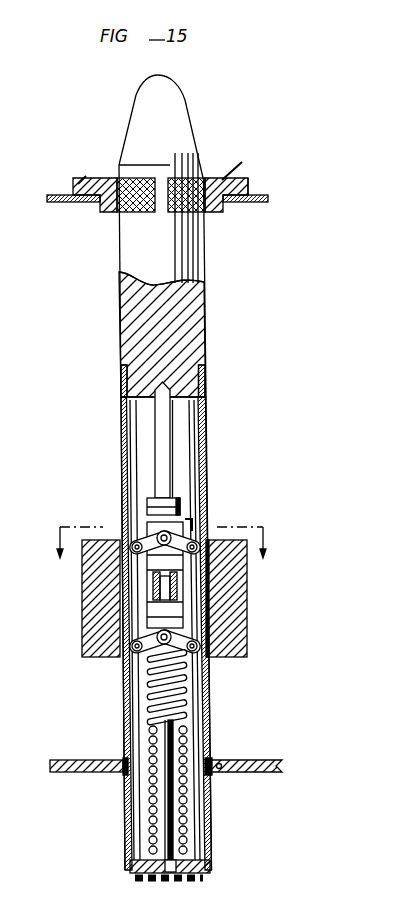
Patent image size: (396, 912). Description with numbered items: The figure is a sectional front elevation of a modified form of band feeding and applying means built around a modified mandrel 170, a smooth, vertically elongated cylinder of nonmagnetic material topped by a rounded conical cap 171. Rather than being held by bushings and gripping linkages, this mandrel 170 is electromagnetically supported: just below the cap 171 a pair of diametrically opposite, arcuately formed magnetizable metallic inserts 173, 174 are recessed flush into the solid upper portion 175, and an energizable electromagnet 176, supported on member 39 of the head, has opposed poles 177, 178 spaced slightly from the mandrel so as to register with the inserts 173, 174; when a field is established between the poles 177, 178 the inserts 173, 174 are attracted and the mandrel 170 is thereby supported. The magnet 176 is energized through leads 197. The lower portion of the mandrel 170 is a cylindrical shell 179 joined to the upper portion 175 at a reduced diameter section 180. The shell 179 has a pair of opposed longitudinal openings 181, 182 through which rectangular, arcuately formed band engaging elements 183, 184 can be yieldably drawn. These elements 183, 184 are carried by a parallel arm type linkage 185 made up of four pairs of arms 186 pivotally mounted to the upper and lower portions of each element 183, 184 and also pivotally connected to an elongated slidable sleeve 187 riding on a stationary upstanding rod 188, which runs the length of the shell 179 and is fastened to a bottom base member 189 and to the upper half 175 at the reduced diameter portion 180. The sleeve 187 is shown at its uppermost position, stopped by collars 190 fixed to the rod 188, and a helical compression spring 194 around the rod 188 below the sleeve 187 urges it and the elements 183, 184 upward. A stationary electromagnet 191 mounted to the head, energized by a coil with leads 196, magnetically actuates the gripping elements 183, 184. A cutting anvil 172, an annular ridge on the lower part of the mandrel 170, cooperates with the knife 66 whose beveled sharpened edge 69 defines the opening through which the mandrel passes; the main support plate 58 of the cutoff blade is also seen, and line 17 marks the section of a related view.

The section line 17- 17 is at (156, 548).
The member 39 is at (268, 200).
The main support plate 58 is at (270, 755).
The knife 66 is at (219, 770).
The beveled and sharpened edge 69 is at (212, 775).
The mandrel 170 is at (206, 330).
The rounded conical cap 171 is at (153, 105).
The cutting anvil 172 is at (211, 762).
The magnetizable metallic insert 173 is at (128, 214).
The magnetizable metallic insert 174 is at (206, 214).
The solid upper portion 175 is at (128, 320).
The energizable electromagnet 176 is at (248, 182).
The pole 177 is at (117, 178).
The pole 178 is at (216, 180).
The cylindrical shell 179 is at (206, 437).
The reduced diameter section 180 is at (128, 382).
The longitudinal opening 181 is at (131, 730).
The longitudinal opening 182 is at (205, 722).
The band engaging element 183 is at (130, 650).
The band engaging element 184 is at (200, 650).
The parallel arm type linkage 185 is at (196, 522).
The arms 186 is at (178, 538).
The slidable sleeve 187 is at (148, 660).
The rod 188 is at (155, 458).
The bottom base member 189 is at (130, 870).
The collar 190 is at (180, 500).
The stationary electromagnet 191 is at (241, 634).
The helical compression spring 194 is at (152, 835).
The leads 196 is at (235, 895).
The leads 197 is at (86, 176).